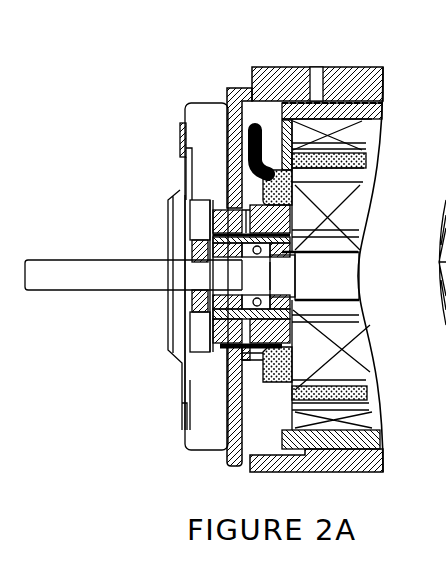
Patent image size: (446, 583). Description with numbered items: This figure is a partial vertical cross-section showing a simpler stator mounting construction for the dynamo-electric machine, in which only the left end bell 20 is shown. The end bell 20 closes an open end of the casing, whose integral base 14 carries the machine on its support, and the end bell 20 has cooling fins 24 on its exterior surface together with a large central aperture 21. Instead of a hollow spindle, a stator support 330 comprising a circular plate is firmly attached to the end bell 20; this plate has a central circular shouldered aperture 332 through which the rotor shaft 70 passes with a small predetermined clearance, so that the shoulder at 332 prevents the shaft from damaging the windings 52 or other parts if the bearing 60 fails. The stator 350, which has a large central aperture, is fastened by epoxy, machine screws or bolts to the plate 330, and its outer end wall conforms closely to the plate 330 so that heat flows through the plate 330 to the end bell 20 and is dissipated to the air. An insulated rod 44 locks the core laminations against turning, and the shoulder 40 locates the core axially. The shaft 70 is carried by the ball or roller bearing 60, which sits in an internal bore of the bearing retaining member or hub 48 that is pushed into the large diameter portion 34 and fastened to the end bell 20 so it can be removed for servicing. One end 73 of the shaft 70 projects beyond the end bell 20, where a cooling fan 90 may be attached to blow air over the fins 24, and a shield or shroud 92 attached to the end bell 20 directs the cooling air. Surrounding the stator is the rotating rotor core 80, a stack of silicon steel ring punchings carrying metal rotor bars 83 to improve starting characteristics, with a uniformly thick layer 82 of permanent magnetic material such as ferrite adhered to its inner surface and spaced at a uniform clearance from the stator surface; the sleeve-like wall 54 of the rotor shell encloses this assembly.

The end bell 20 is at (227, 98).
The cooling fins 24 is at (208, 120).
The windings 52 is at (238, 157).
The central aperture 21 is at (200, 202).
The cooling fan 90 is at (212, 222).
The shaft end 73 is at (65, 262).
The shaft 70 is at (160, 278).
The shield or shroud 92 is at (173, 315).
The bearing retaining member or hub 48 is at (236, 312).
The ball bearing or roller bearing 60 is at (240, 338).
The large diameter portion 34 is at (255, 365).
The stator support 330 is at (265, 385).
The shoulder 40 is at (242, 458).
The layer of permanent magnetic material 82 is at (270, 462).
The base 14 is at (308, 462).
The shouldered aperture 332 is at (315, 350).
The housing wall 54 is at (248, 122).
The metal rotor bars 83 is at (256, 124).
The insulated rod 44 is at (337, 235).
The stator 350 is at (362, 182).
The rotor core 80 is at (368, 135).